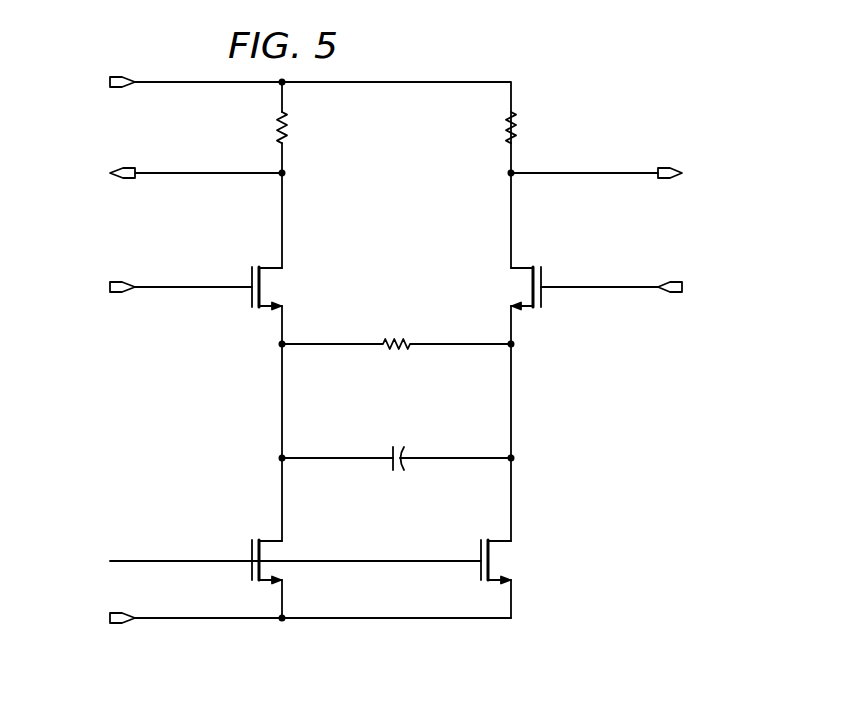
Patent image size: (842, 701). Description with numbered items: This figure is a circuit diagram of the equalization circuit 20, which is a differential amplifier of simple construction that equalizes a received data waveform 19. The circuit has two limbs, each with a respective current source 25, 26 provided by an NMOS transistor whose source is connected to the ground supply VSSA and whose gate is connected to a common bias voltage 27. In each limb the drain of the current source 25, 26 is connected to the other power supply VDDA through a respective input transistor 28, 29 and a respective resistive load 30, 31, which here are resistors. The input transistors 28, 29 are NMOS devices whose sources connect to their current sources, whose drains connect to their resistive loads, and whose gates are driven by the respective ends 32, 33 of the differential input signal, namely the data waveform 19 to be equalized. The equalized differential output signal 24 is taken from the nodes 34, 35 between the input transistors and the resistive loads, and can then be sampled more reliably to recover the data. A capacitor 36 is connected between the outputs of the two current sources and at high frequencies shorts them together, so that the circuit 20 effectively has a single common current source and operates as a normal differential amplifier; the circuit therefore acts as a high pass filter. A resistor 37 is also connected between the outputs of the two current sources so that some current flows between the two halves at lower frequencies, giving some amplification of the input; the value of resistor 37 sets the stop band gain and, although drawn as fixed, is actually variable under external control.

The equalization circuit 20 is at (586, 424).
The resistive load 30 is at (279, 125).
The resistive load 31 is at (508, 125).
The output signal 24 is at (157, 172).
The node 34 is at (178, 175).
The node 35 is at (613, 175).
The data waveform 19 is at (157, 286).
The end of differential input signal 32 is at (178, 289).
The end of differential input signal 33 is at (613, 289).
The input transistor 28 is at (250, 272).
The input transistor 29 is at (543, 272).
The resistor 37 is at (395, 350).
The capacitor 36 is at (399, 472).
The common bias voltage 27 is at (157, 560).
The current source 25 is at (250, 575).
The current source 26 is at (480, 548).